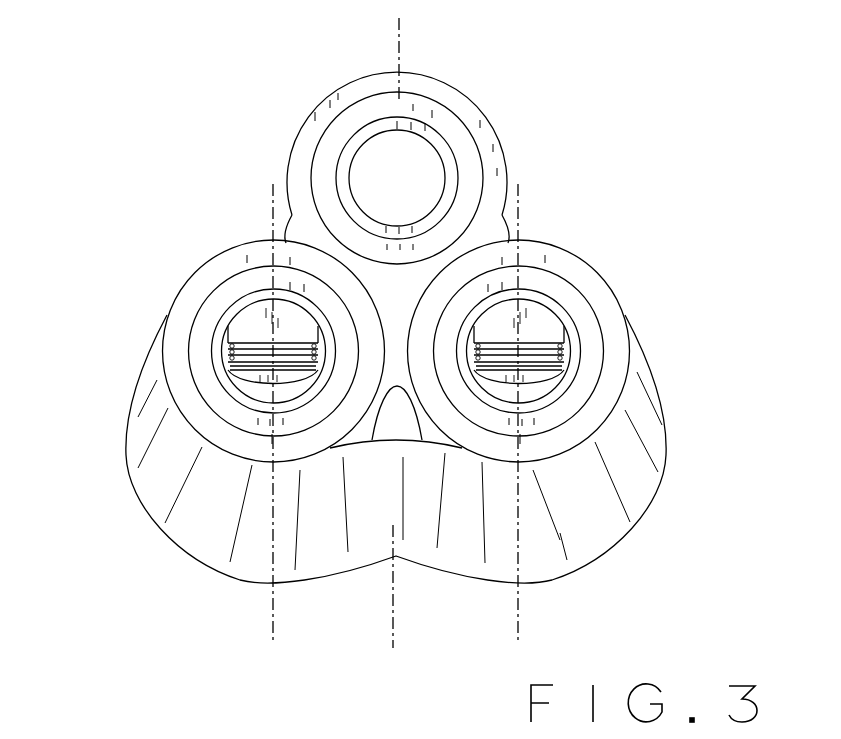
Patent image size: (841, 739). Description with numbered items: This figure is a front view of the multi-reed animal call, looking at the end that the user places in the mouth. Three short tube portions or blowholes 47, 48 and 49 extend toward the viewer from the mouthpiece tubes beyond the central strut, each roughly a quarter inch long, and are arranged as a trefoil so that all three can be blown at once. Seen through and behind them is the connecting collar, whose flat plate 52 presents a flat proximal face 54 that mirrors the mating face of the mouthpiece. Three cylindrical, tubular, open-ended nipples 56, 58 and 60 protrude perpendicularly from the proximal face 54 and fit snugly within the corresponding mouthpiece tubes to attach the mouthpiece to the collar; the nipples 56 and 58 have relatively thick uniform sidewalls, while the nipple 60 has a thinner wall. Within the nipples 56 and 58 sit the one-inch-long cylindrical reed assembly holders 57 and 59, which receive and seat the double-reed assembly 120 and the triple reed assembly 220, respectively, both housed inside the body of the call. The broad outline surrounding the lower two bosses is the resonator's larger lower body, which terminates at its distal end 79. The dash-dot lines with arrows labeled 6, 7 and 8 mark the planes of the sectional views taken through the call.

The blowhole 47 is at (178, 378).
The blowhole 48 is at (620, 327).
The blowhole 49 is at (370, 104).
The plate 52 is at (483, 221).
The proximal face 54 is at (320, 237).
The nipple 56 is at (237, 290).
The reed assembly holder 57 is at (226, 335).
The nipple 58 is at (572, 282).
The reed assembly holder 59 is at (578, 368).
The nipple 60 is at (437, 133).
The distal end 79 is at (672, 458).
The double-reed assembly 120 is at (534, 317).
The triple reed assembly 220 is at (258, 317).
The section line 6- 6 is at (262, 628).
The section line 7- 7 is at (530, 626).
The section line 8- 8 is at (454, 648).